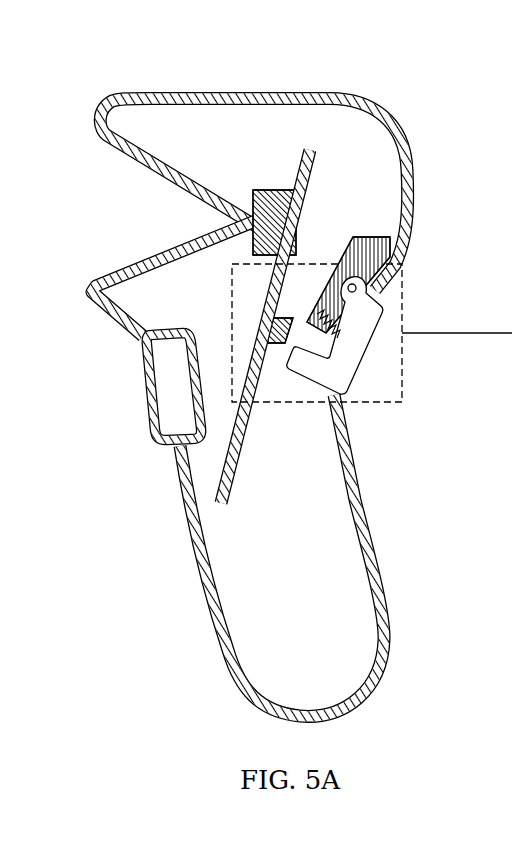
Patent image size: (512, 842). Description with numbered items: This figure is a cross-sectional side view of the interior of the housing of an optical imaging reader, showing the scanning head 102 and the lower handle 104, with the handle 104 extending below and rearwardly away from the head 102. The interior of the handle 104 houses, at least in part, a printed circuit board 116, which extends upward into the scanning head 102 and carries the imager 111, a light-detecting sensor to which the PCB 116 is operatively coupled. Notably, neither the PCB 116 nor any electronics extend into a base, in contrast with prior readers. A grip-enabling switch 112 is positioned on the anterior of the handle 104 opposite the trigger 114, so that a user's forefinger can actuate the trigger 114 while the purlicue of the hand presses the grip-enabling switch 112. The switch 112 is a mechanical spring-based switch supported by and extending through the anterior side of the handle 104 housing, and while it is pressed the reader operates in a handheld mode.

The scanning head 102 is at (397, 142).
The lower handle 104 is at (353, 507).
The imager 111 is at (275, 197).
The grip-enabling switch 112 is at (382, 356).
The trigger 114 is at (170, 382).
The printed circuit board 116 is at (243, 445).